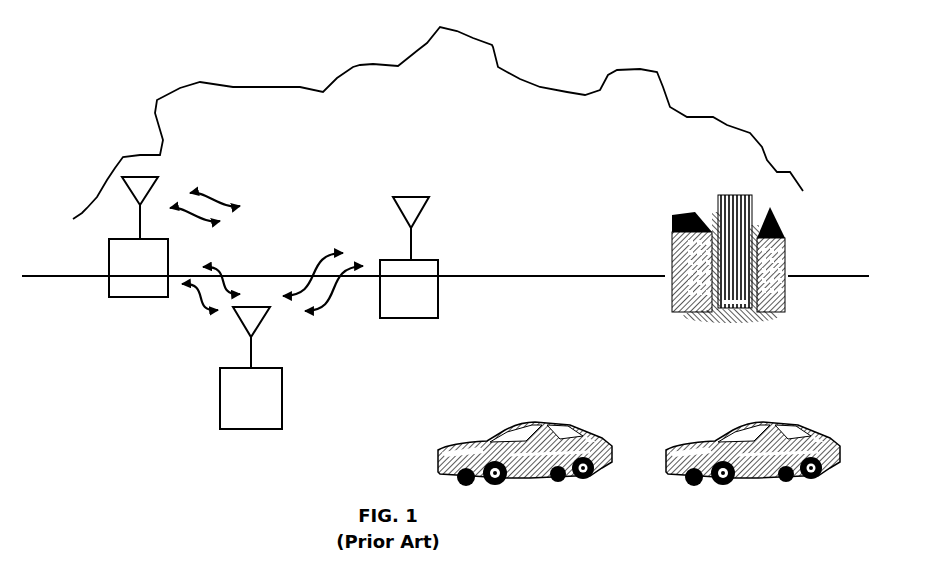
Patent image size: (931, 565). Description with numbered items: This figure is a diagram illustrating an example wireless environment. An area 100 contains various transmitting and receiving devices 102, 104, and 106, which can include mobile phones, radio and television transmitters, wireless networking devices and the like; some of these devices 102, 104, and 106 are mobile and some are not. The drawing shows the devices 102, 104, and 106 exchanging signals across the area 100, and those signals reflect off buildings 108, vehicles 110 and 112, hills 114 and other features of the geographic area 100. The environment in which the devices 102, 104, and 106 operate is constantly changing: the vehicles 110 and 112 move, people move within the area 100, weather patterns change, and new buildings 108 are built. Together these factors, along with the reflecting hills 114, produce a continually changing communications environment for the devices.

The area 100 is at (702, 85).
The transmitting and receiving device 102 is at (121, 278).
The transmitting and receiving device 104 is at (233, 408).
The transmitting and receiving device 106 is at (391, 298).
The buildings 108 is at (683, 203).
The vehicle 110 is at (562, 420).
The vehicle 112 is at (787, 420).
The hills 114 is at (520, 78).